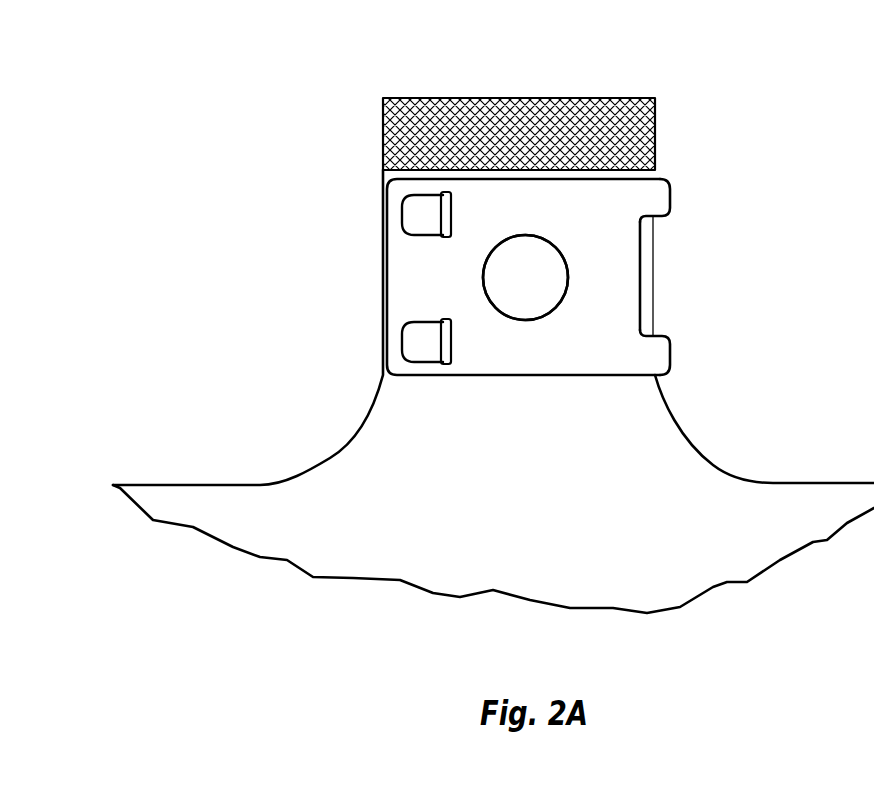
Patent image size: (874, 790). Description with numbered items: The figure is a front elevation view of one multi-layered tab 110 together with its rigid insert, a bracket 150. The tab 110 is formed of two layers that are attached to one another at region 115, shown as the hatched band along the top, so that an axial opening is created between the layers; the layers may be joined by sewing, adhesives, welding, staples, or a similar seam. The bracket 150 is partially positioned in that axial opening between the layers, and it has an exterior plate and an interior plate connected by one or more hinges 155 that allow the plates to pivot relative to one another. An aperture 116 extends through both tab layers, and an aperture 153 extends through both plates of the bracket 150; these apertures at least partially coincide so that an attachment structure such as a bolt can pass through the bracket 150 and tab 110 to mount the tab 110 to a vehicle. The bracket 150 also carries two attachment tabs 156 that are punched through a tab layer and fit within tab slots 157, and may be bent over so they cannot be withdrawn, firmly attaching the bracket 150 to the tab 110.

The multi-layered tab 110 is at (698, 111).
The region 115 is at (572, 113).
The aperture 116 is at (500, 283).
The bracket 150 is at (617, 313).
The aperture 153 is at (550, 266).
The hinges 155 is at (660, 202).
The attachment tabs 156 is at (412, 210).
The tab slots 157 is at (453, 212).